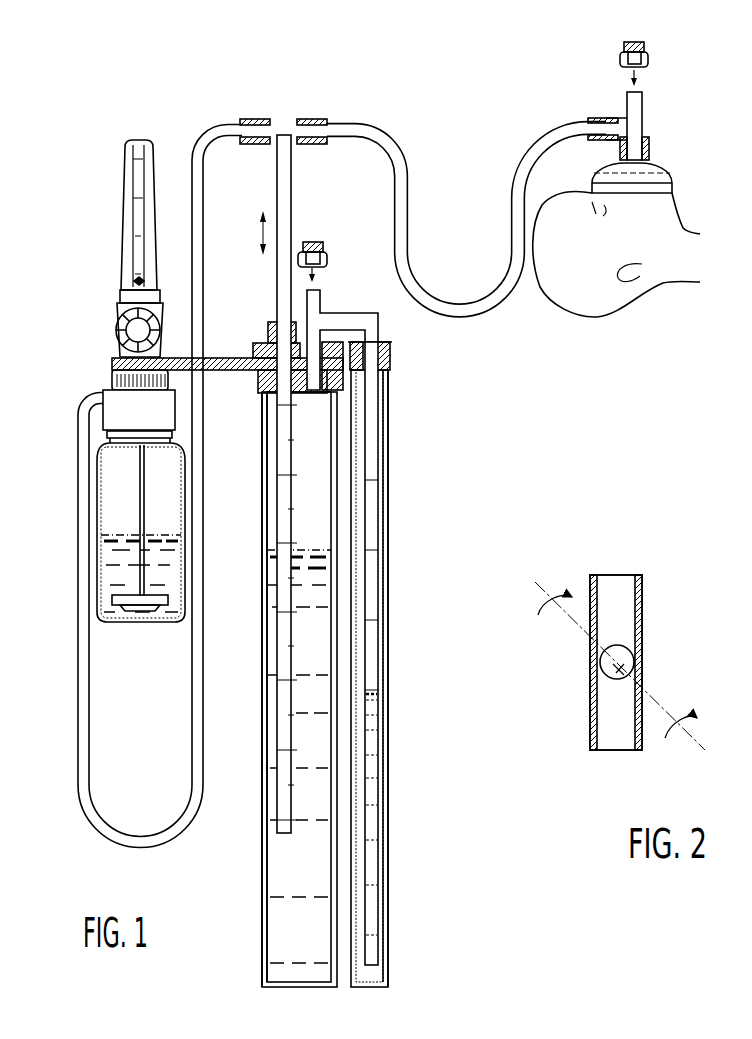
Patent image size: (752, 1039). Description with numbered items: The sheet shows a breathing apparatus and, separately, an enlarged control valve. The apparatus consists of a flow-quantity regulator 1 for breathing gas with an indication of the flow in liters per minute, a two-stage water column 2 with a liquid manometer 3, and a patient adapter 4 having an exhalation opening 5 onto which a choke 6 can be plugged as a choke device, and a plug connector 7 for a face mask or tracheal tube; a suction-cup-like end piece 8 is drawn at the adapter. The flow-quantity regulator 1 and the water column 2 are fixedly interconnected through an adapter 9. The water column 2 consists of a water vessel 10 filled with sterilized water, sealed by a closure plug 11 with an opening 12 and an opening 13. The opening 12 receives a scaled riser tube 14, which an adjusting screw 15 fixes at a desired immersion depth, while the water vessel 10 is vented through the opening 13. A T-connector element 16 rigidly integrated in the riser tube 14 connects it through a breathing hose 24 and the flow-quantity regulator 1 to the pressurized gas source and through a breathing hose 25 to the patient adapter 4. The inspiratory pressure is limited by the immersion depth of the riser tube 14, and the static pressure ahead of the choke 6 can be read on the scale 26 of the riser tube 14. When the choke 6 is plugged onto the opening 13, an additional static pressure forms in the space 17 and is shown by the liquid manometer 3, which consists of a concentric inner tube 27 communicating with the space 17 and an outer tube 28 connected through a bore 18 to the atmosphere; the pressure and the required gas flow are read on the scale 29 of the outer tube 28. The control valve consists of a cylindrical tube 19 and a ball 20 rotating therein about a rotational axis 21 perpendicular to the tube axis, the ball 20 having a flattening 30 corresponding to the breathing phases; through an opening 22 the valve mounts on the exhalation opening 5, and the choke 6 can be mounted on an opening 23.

In FIG. 1, the flow-quantity regulator 1 is at (117, 300).
In FIG. 1, the two-stage water column 2 is at (258, 950).
In FIG. 1, the liquid manometer 3 is at (398, 952).
In FIG. 1, the patient adapter 4 is at (613, 110).
In FIG. 1, the exhalation opening 5 is at (645, 102).
In FIG. 1, the choke 6 is at (327, 256).
In FIG. 1, the plug connector 7 is at (649, 142).
In FIG. 1, the suction cup 8 is at (660, 166).
In FIG. 1, the adapter 9 is at (112, 366).
In FIG. 1, the water vessel 10 is at (262, 463).
In FIG. 1, the closure plug 11 is at (258, 352).
In FIG. 1, the opening 12 is at (263, 385).
In FIG. 1, the opening 13 is at (320, 300).
In FIG. 1, the scaled riser tube 14 is at (277, 435).
In FIG. 1, the adjusting screw 15 is at (268, 330).
In FIG. 1, the T-connector element 16 is at (280, 120).
In FIG. 1, the space 17 is at (300, 487).
In FIG. 1, the bore 18 is at (390, 386).
In FIG. 2, the cylindrical tube 19 is at (641, 582).
In FIG. 2, the ball 20 is at (622, 655).
In FIG. 2, the rotational axis 21 is at (655, 702).
In FIG. 2, the opening 22 is at (618, 750).
In FIG. 2, the opening 23 is at (617, 575).
In FIG. 1, the breathing hose 24 is at (210, 128).
In FIG. 1, the breathing hose 25 is at (380, 126).
In FIG. 1, the scale 26 is at (283, 700).
In FIG. 1, the inner tube 27 is at (380, 582).
In FIG. 1, the outer tube 28 is at (387, 510).
In FIG. 1, the scale 29 is at (370, 457).
In FIG. 2, the flattening 30 is at (632, 666).